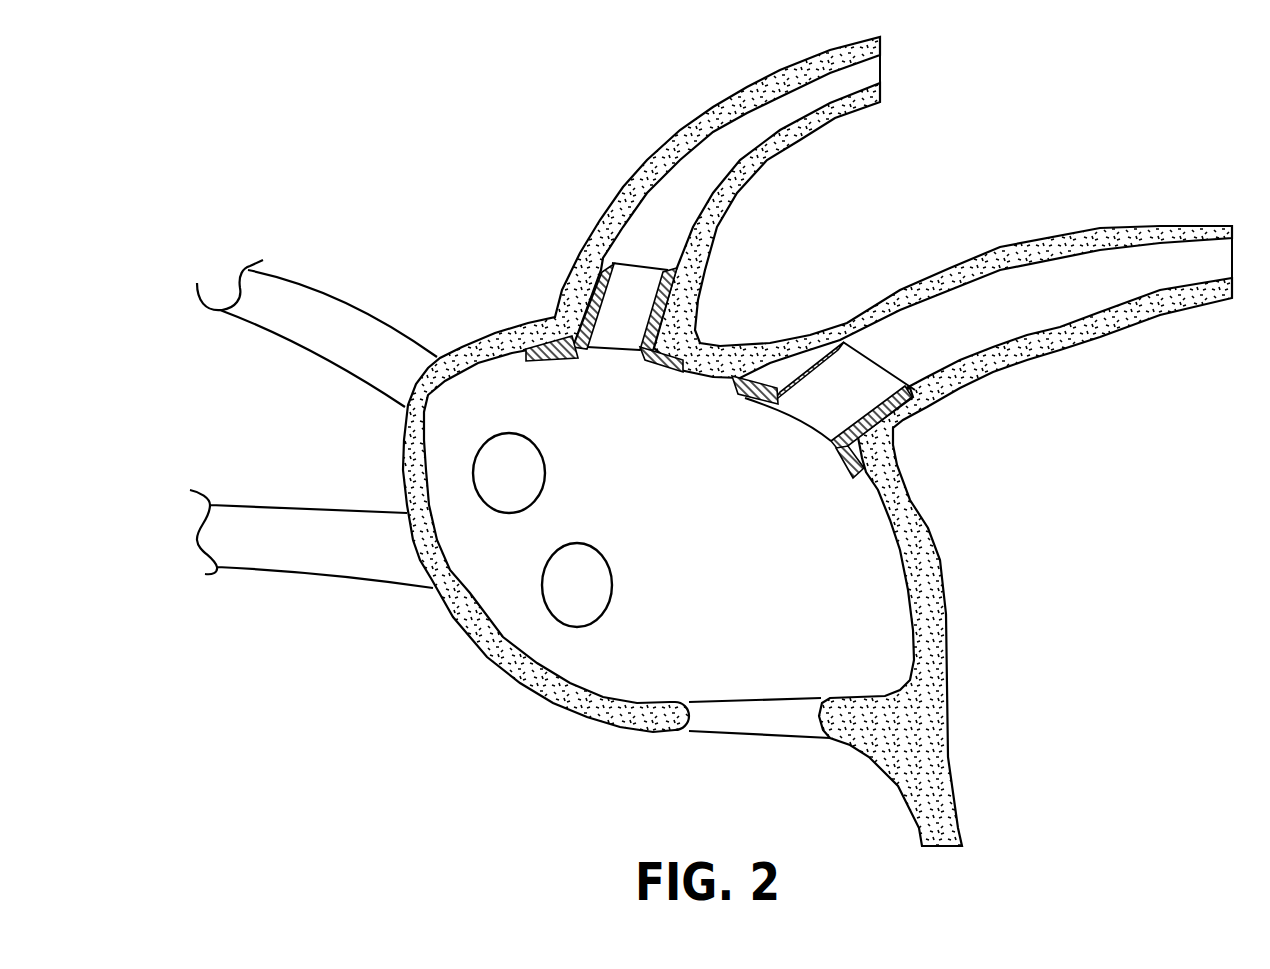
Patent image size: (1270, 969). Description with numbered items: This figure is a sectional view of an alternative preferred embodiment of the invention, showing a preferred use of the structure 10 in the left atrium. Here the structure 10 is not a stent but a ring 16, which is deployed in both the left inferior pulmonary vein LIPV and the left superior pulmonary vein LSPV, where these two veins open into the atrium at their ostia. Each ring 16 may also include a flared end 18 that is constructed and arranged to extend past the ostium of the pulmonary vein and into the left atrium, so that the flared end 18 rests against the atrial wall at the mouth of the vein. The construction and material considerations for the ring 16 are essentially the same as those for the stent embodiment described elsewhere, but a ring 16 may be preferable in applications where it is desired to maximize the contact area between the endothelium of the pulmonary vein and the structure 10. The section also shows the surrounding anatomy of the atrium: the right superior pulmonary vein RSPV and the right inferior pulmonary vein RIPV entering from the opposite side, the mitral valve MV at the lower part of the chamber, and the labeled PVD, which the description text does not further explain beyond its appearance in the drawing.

The structure 10 is at (476, 726).
The ring 16 is at (622, 308).
The flared end 18 is at (660, 366).
The left inferior pulmonary vein LIPV is at (703, 167).
The left superior pulmonary vein LSPV is at (1013, 307).
The right superior pulmonary vein RSPV is at (350, 325).
The right inferior pulmonary vein RIPV is at (362, 558).
The pulmonary vein devices PVD is at (612, 593).
The mitral valve MV is at (765, 720).